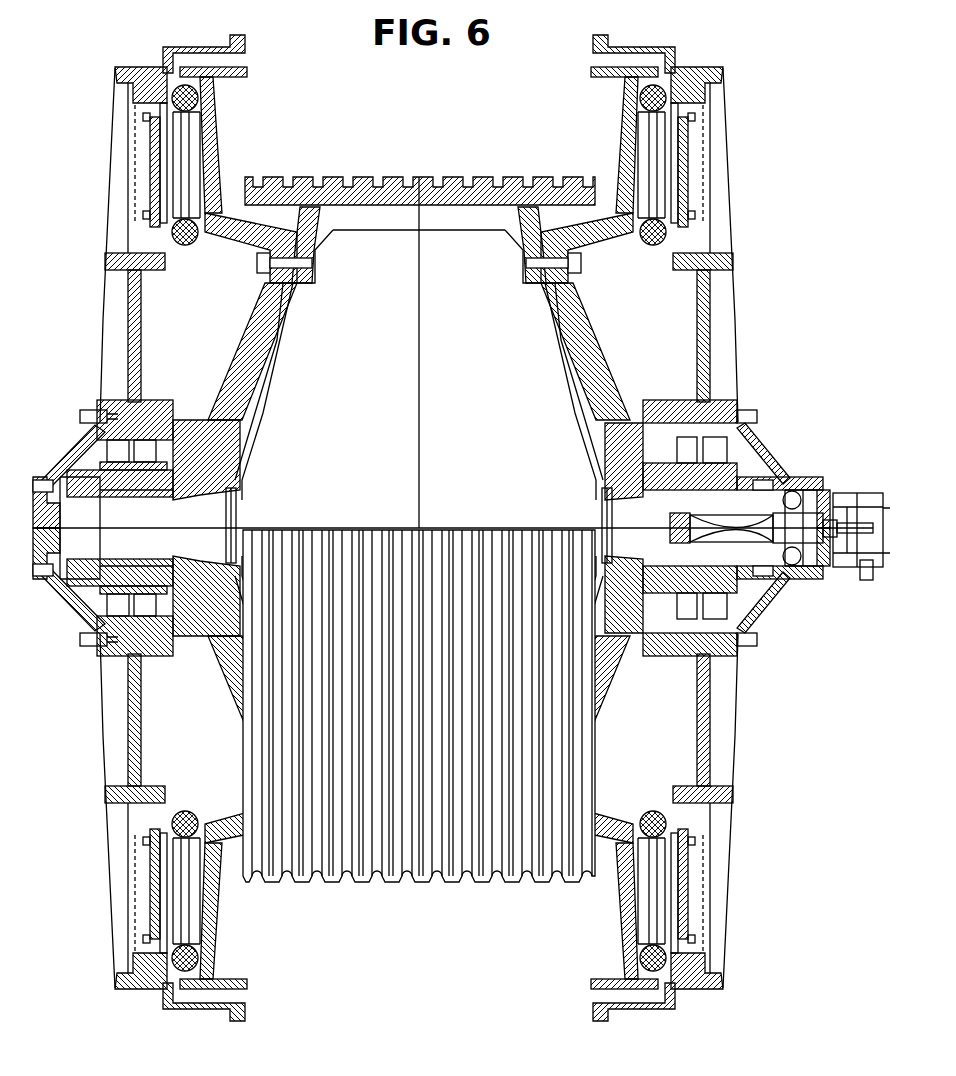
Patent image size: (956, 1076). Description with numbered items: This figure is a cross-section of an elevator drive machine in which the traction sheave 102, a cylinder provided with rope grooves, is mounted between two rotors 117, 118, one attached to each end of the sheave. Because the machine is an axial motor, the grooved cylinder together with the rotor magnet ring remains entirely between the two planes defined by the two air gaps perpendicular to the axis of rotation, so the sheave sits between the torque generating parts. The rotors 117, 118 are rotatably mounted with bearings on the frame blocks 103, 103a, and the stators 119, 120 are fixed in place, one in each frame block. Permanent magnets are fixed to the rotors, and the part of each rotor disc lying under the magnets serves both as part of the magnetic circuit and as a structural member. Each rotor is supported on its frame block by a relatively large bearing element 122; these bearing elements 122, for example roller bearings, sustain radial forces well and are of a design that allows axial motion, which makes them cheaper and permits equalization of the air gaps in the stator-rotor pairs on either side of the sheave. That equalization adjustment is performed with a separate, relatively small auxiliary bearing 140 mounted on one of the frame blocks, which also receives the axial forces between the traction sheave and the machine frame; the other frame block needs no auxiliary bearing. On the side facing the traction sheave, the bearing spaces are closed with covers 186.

The traction sheave 102 is at (392, 180).
The frame block 103 is at (706, 754).
The frame block 103a is at (103, 805).
The rotor 117 is at (224, 138).
The rotor 118 is at (612, 905).
The stator 119 is at (148, 165).
The stator 120 is at (660, 170).
The bearing element 122 is at (82, 423).
The auxiliary bearing 140 is at (820, 478).
The cover 186 is at (238, 520).